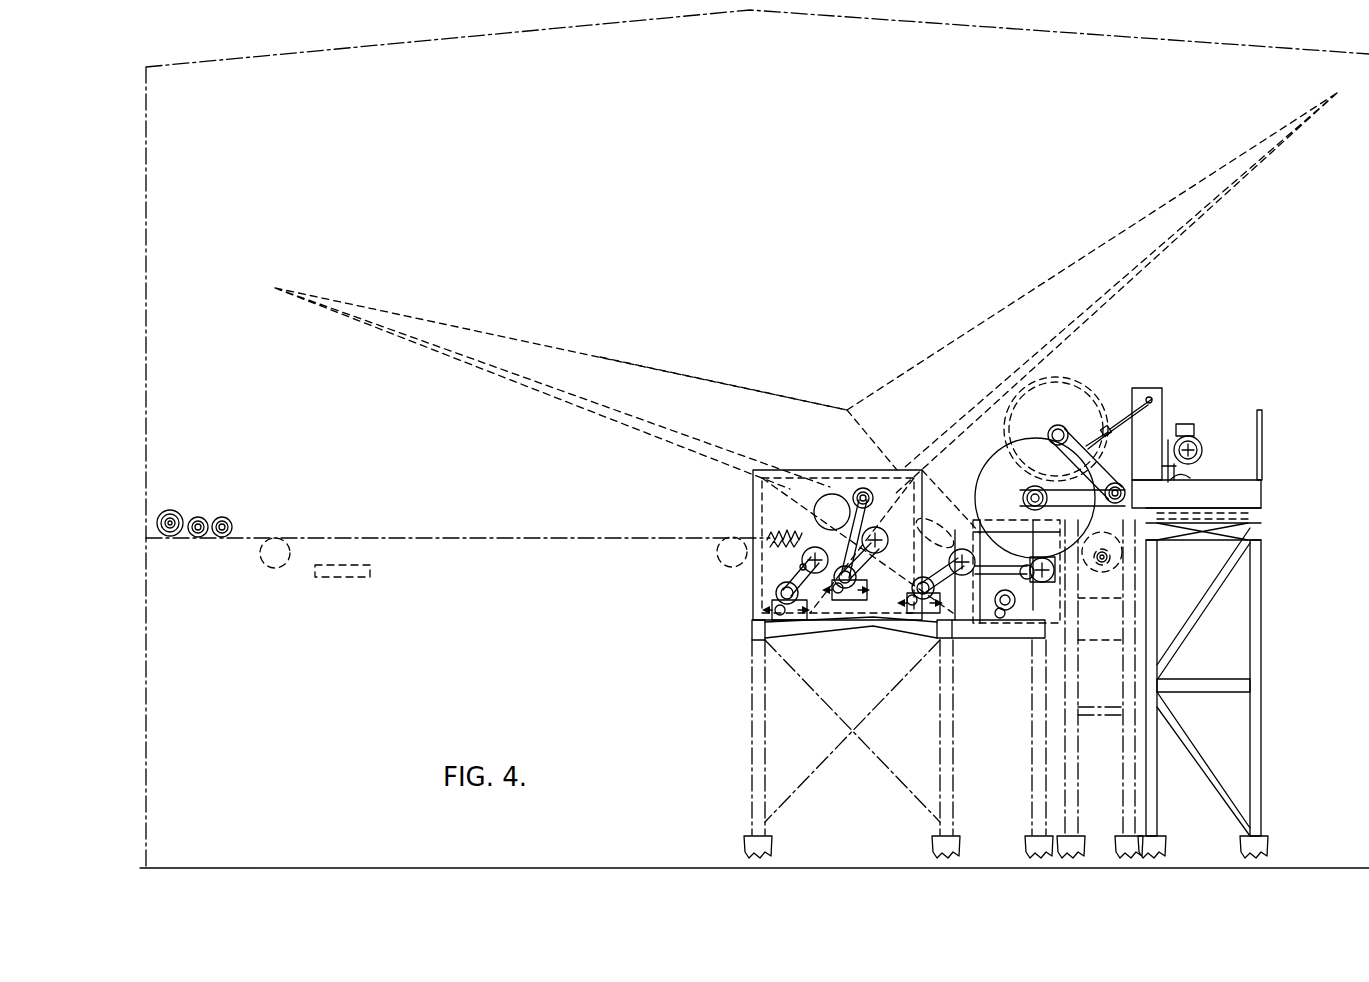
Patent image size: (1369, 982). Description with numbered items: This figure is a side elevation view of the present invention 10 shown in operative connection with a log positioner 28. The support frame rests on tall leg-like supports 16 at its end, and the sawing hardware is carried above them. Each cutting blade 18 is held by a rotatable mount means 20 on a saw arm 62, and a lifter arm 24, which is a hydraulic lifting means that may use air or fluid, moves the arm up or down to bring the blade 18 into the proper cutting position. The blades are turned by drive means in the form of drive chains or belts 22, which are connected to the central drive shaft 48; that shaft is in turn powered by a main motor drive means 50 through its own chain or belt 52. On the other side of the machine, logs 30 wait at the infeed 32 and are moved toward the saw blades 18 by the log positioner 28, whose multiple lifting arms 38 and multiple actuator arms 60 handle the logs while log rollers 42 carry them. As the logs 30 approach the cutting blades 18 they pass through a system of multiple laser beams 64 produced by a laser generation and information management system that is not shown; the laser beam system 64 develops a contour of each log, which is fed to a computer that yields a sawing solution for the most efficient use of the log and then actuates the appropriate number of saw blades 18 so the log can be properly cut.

The present invention 10 is at (1213, 322).
The leg-like supports 16 is at (1276, 742).
The cutting blades 18 is at (1080, 390).
The rotatable mount means 20 is at (1043, 412).
The drive chains or belts 22 is at (1060, 482).
The lifter arm 24 is at (1117, 417).
The log positioner 28 is at (838, 310).
The logs 30 is at (170, 510).
The infeed 32 is at (250, 538).
The lifting arms 38 is at (797, 517).
The log rollers 42 is at (975, 625).
The central drive shaft 48 is at (1130, 487).
The main motor drive means 50 is at (1190, 440).
The chain or belt 52 is at (1175, 470).
The actuator arms 60 is at (803, 567).
The saw arm 62 is at (1075, 425).
The laser beams 64 is at (1152, 254).